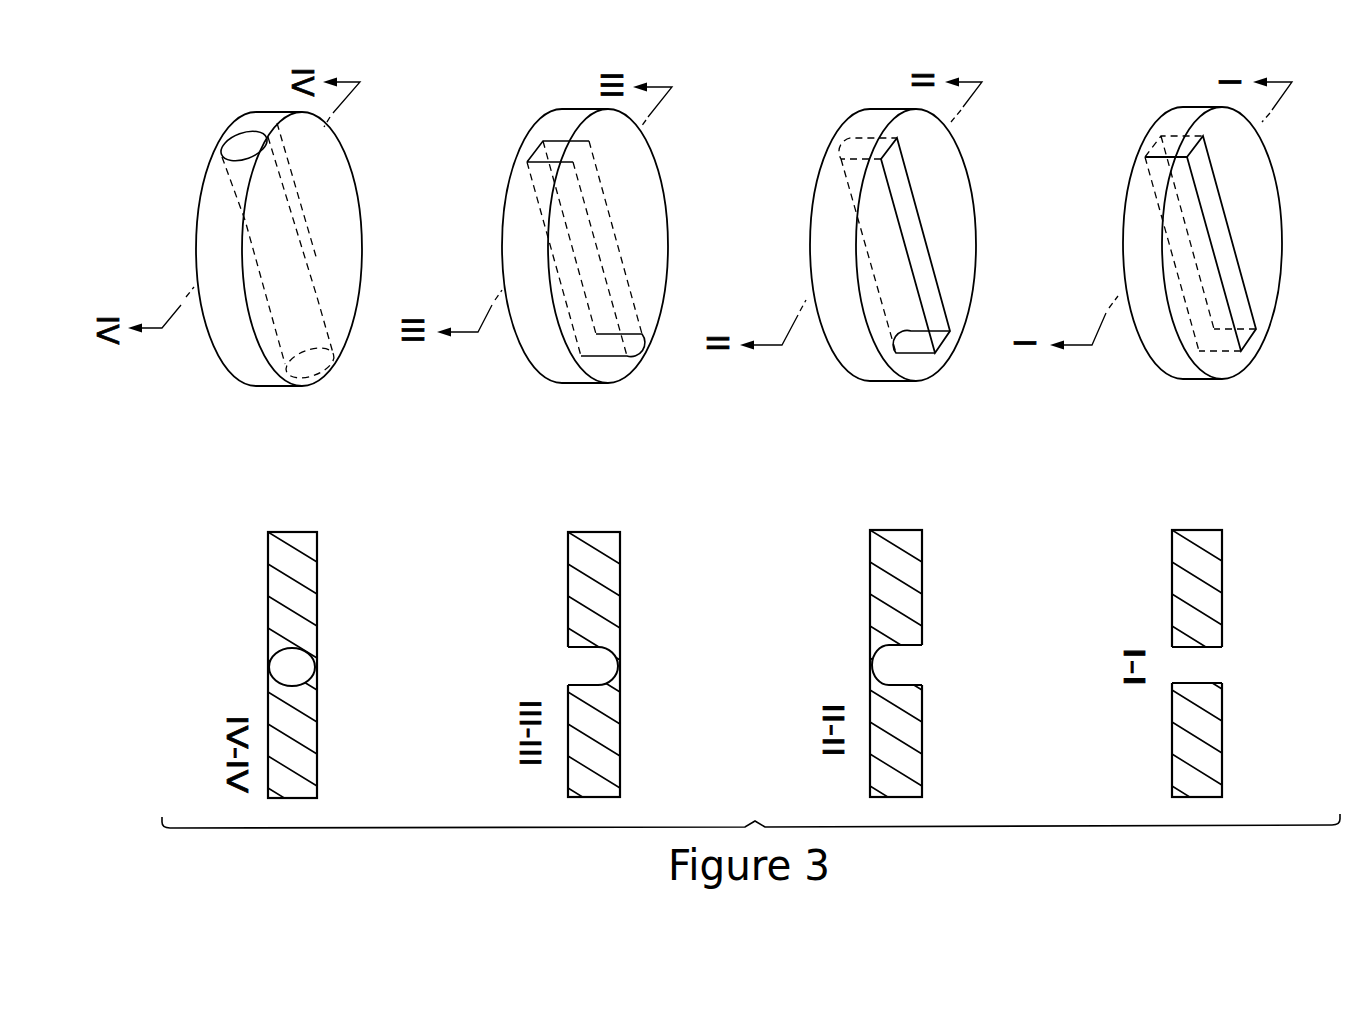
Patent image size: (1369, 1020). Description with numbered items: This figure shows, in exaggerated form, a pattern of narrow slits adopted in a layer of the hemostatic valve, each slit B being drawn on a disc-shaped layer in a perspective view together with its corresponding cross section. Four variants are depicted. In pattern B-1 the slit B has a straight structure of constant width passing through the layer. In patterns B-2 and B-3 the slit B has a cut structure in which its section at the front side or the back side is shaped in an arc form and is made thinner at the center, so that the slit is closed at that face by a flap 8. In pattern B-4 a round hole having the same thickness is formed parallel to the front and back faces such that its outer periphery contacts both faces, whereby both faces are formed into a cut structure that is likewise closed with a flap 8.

The slit B is at (777, 419).
The flap 8 is at (555, 661).
The pattern B-1 is at (1182, 289).
The pattern B-2 is at (877, 284).
The pattern B-3 is at (561, 281).
The pattern B-4 is at (257, 283).